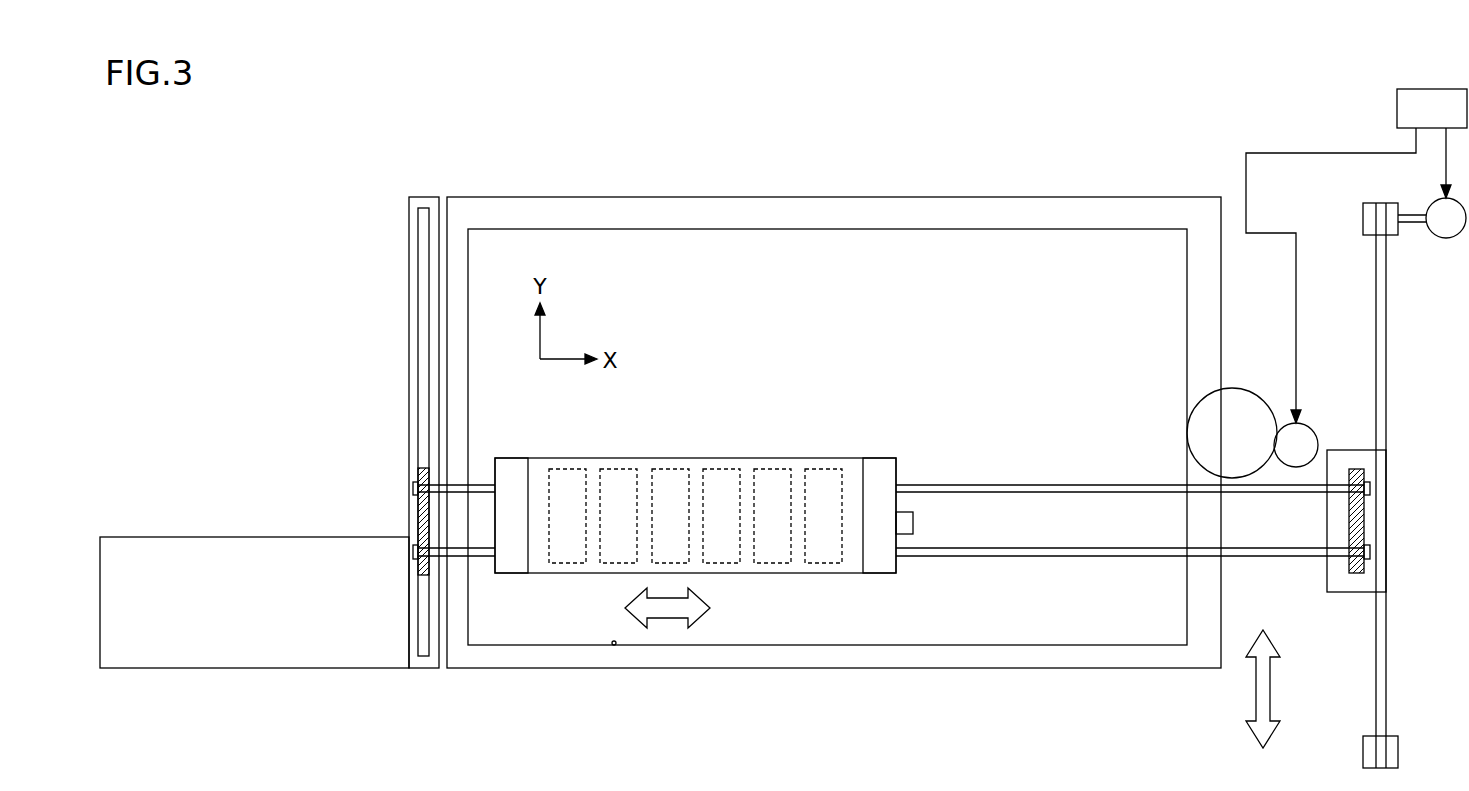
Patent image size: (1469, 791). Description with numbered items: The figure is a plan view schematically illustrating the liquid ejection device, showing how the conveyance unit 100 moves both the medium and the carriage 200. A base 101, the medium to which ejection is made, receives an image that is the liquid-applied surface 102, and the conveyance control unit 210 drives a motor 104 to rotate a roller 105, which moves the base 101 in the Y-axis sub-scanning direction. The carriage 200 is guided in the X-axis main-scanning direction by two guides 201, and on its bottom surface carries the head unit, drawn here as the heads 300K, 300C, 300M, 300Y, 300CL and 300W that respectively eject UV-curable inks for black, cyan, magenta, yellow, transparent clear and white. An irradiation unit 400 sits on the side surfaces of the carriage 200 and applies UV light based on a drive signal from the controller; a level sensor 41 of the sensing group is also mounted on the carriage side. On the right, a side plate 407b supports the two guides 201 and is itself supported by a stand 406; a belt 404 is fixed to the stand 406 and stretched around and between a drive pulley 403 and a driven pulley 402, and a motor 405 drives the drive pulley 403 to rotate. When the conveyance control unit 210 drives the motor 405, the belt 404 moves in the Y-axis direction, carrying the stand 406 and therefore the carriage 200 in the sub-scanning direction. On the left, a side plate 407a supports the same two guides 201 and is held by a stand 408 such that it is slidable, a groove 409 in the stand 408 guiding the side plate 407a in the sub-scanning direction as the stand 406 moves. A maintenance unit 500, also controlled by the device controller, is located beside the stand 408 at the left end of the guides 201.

The conveyance unit 100 is at (794, 668).
The base 101 is at (703, 645).
The liquid-applied surface 102 is at (614, 645).
The motor 104 is at (1312, 429).
The roller 105 is at (1250, 392).
The carriage 200 is at (788, 573).
The guides 201 is at (1033, 485).
The conveyance control unit 210 is at (1397, 108).
The black head 300K is at (570, 469).
The cyan head 300C is at (623, 469).
The magenta head 300M is at (672, 469).
The yellow head 300Y is at (725, 469).
The clear head 300CL is at (773, 469).
The white head 300W is at (827, 469).
The irradiation unit 400 is at (514, 458).
The driven pulley 402 is at (1398, 750).
The drive pulley 403 is at (1363, 212).
The belt 404 is at (1386, 335).
The motor 405 is at (1446, 238).
The stand 406 is at (1386, 493).
The side plate 407a is at (418, 509).
The side plate 407b is at (1364, 525).
The stand 408 is at (409, 250).
The groove 409 is at (418, 319).
The level sensor 41 is at (916, 522).
The maintenance unit 500 is at (276, 537).